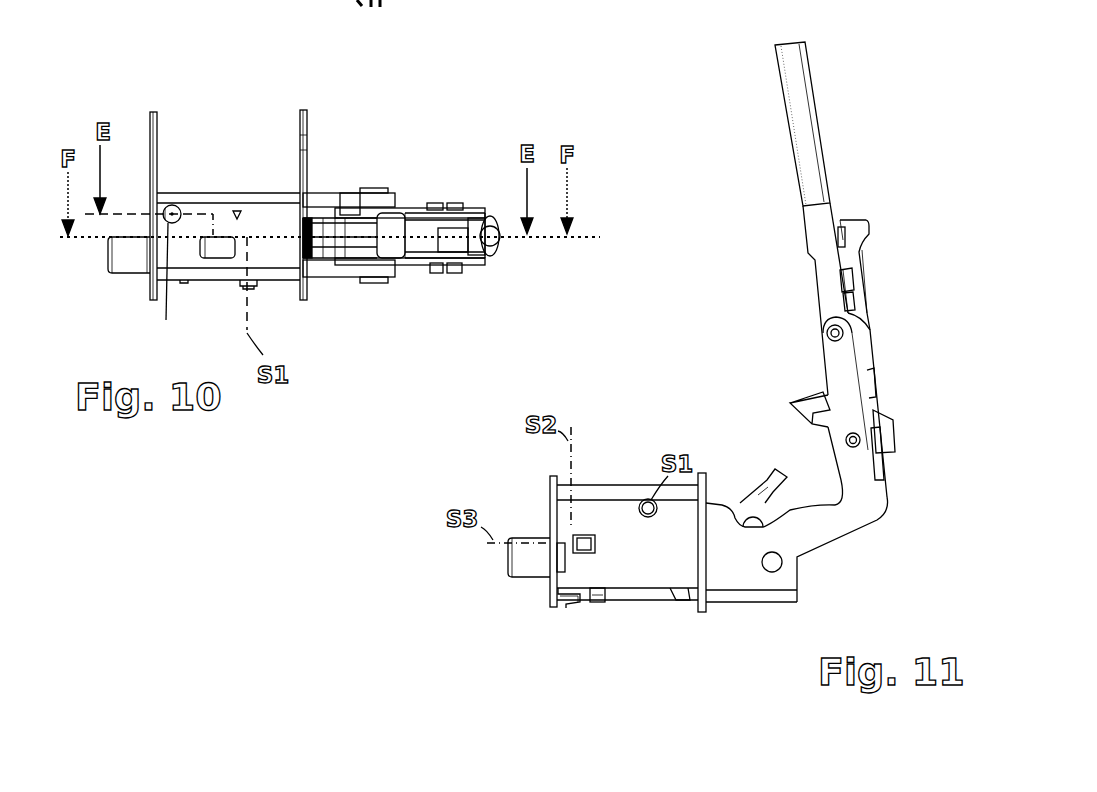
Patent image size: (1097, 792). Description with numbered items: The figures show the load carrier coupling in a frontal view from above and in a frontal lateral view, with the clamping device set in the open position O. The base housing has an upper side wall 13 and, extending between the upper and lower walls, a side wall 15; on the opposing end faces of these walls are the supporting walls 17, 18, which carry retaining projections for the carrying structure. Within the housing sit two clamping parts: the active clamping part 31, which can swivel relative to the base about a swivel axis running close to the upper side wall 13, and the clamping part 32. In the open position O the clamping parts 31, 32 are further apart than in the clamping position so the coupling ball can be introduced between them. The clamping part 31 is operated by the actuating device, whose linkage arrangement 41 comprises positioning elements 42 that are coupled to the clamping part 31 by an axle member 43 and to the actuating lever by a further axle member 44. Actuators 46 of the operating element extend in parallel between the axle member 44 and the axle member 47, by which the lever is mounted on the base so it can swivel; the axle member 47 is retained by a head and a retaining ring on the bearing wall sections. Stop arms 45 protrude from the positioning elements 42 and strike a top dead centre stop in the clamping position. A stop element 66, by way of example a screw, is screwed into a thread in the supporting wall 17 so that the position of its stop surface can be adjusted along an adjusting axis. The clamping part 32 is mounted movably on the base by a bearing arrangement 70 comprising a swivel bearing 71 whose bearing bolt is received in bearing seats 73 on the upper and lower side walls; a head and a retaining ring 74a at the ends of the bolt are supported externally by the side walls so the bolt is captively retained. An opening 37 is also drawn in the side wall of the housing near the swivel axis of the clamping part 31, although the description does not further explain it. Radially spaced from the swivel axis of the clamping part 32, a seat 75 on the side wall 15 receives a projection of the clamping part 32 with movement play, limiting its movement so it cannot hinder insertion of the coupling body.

In FIG. 10, the upper side wall 13 is at (222, 283).
In FIG. 10, the supporting wall 17 is at (157, 146).
In FIG. 10, the supporting wall 18 is at (307, 134).
In FIG. 10, the linkage arrangement 41 is at (396, 203).
In FIG. 10, the positioning elements 42 is at (330, 255).
In FIG. 10, the axle member 43 is at (313, 215).
In FIG. 10, the axle member 44 is at (352, 200).
In FIG. 10, the actuators 46 is at (433, 218).
In FIG. 10, the stop element 66 is at (125, 263).
In FIG. 10, the bearing arrangement 70 is at (195, 202).
In FIG. 10, the swivel bearing 71 is at (167, 290).
In FIG. 10, the bearing seats 73 is at (182, 211).
In FIG. 11, the side wall 15 is at (648, 588).
In FIG. 11, the clamping part 31 is at (680, 600).
In FIG. 11, the clamping part 32 is at (597, 605).
In FIG. 11, the bore 37 is at (645, 500).
In FIG. 11, the stop arms 45 is at (773, 478).
In FIG. 11, the axle member 47 is at (780, 564).
In FIG. 11, the retaining ring 74a is at (566, 609).
In FIG. 11, the seat 75 is at (597, 548).
In FIG. 11, the open position O is at (875, 103).